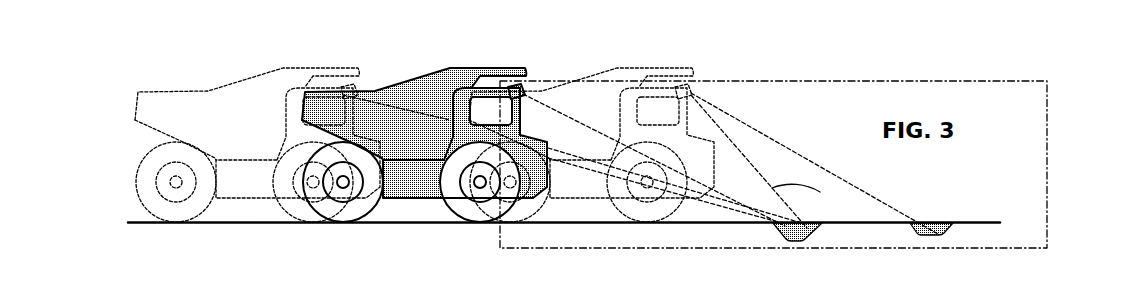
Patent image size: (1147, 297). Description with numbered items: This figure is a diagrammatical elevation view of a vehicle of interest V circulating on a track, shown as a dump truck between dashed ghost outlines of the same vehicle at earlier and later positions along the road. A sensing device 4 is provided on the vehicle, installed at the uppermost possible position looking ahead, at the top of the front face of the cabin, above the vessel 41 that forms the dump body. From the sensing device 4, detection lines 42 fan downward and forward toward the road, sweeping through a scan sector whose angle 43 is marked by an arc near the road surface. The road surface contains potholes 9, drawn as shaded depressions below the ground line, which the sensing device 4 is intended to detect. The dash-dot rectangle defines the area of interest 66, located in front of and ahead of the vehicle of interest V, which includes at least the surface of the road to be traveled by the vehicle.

The vehicle (dump truck) V is at (403, 78).
The sensing device 4 is at (524, 92).
The vessel (dump body) 41 is at (399, 100).
The detection lines (sensing beams) 42 is at (570, 120).
The detection angle 43 is at (799, 199).
The pothole 9 is at (773, 232).
The area of interest 66 is at (962, 80).